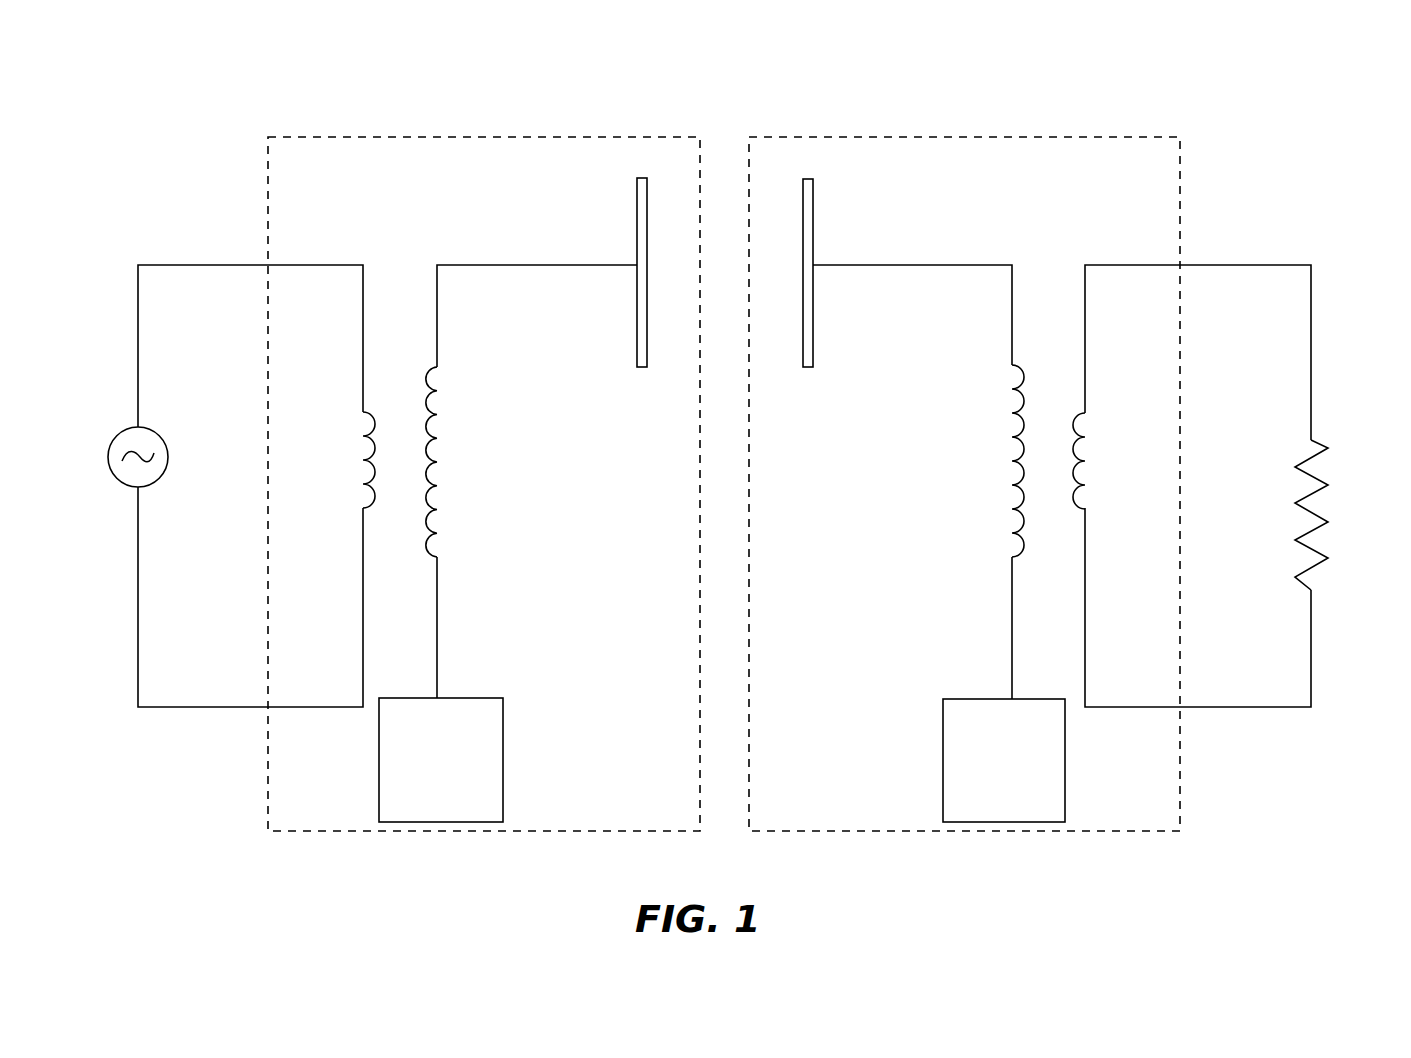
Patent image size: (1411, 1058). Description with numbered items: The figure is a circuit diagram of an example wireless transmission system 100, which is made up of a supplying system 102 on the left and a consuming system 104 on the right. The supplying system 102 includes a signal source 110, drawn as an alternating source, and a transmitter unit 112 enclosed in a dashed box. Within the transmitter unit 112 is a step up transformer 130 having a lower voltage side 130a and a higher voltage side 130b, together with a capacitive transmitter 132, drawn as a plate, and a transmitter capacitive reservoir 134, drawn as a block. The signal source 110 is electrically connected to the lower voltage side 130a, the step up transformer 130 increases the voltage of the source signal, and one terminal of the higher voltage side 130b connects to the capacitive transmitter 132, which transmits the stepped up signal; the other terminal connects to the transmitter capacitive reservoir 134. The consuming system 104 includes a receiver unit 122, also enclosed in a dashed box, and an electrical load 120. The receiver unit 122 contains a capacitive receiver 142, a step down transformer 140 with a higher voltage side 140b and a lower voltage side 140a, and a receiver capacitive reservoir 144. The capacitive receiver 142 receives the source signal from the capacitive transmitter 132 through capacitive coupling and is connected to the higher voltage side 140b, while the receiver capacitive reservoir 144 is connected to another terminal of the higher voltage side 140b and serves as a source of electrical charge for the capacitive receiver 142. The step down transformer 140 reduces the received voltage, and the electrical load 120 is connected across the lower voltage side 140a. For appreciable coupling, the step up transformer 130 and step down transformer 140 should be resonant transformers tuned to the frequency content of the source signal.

The wireless transmission system 100 is at (157, 902).
The supplying system 102 is at (180, 120).
The consuming system 104 is at (1272, 127).
The signal source 110 is at (121, 432).
The transmitter unit 112 is at (336, 189).
The electrical load 120 is at (1321, 446).
The receiver unit 122 is at (1153, 188).
The step up transformer 130 is at (460, 408).
The lower voltage side 130a is at (372, 452).
The higher voltage side 130b is at (428, 448).
The capacitive transmitter 132 is at (636, 220).
The transmitter capacitive reservoir 134 is at (492, 697).
The step down transformer 140 is at (988, 409).
The lower voltage side 140a is at (1020, 471).
The higher voltage side 140b is at (1075, 473).
The capacitive receiver 142 is at (813, 220).
The receiver capacitive reservoir 144 is at (965, 699).